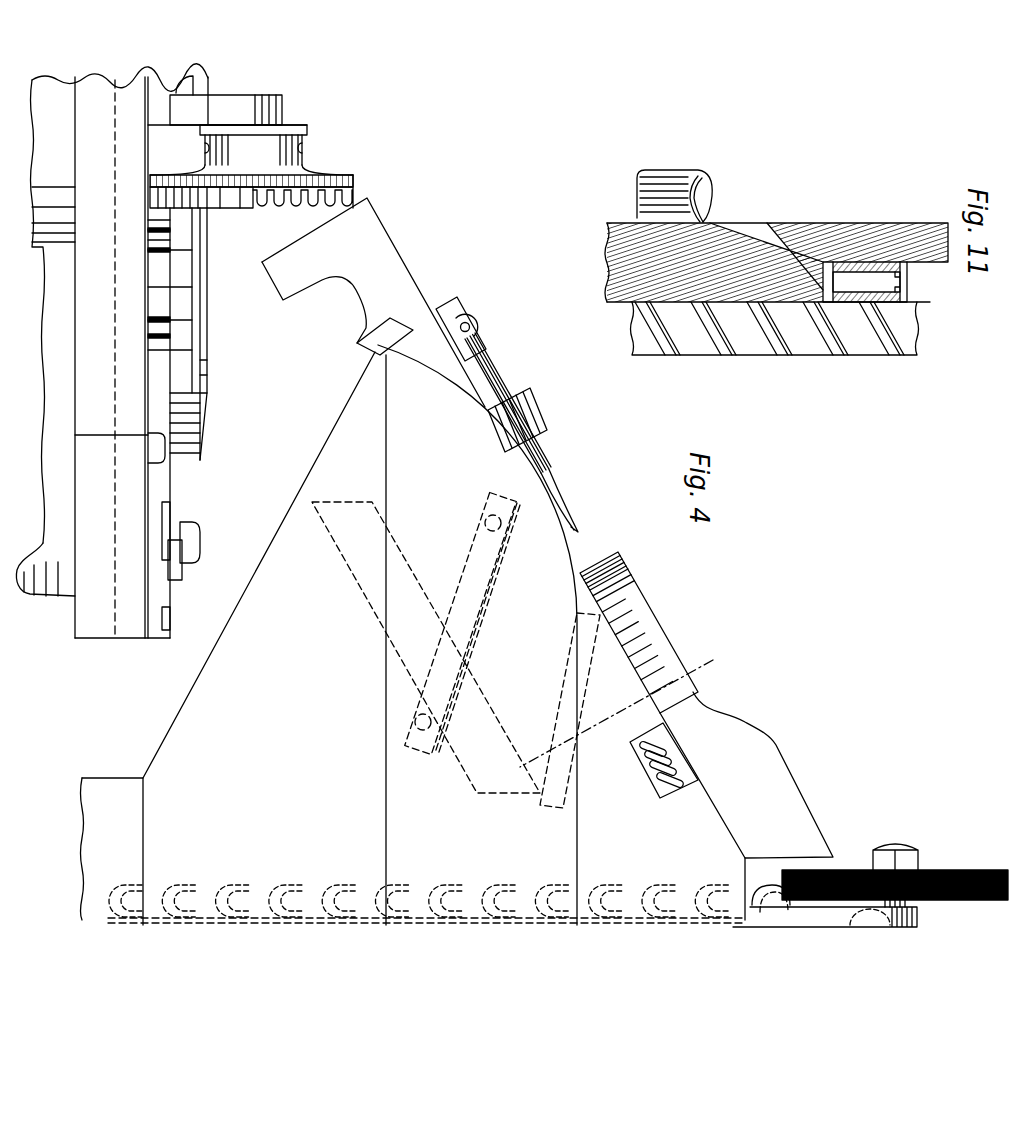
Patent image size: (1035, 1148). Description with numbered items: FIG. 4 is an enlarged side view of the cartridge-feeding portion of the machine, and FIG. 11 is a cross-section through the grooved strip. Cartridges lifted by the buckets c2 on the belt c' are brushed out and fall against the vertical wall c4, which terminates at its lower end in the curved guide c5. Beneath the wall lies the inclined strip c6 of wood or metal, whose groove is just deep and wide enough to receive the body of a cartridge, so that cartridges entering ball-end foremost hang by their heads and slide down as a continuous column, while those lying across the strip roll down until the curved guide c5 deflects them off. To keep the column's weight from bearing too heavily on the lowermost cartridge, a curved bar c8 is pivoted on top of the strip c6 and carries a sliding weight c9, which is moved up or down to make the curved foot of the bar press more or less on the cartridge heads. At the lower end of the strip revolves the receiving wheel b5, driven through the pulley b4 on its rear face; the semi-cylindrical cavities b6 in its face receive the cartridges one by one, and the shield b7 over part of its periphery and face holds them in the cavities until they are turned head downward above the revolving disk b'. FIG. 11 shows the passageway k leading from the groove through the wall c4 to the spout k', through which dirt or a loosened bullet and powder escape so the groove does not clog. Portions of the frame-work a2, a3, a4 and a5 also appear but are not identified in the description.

In FIG. 4, the frame body a2 is at (150, 640).
In FIG. 4, the bearing block a3 is at (182, 580).
In FIG. 4, the base bar a4 is at (918, 918).
In FIG. 4, the base plate a5 is at (1008, 898).
In FIG. 4, the revolving disk b' is at (184, 423).
In FIG. 4, the pulley b4 is at (335, 110).
In FIG. 4, the receiving wheel b5 is at (357, 178).
In FIG. 4, the semi-cylindrical cavities b6 is at (318, 205).
In FIG. 4, the shield b7 is at (236, 209).
In FIG. 11, the belt c' is at (775, 328).
In FIG. 11, the buckets c2 is at (887, 364).
In FIG. 4, the vertical wall c4 is at (731, 775).
In FIG. 11, the vertical wall c4 is at (875, 228).
In FIG. 4, the curved guide c5 is at (639, 632).
In FIG. 4, the grooved strip c6 is at (373, 302).
In FIG. 11, the grooved strip c6 is at (907, 290).
In FIG. 4, the curved bar c8 is at (507, 414).
In FIG. 4, the sliding weight c9 is at (523, 420).
In FIG. 4, the passageway k is at (621, 707).
In FIG. 11, the passageway k is at (766, 256).
In FIG. 4, the spout k' is at (463, 651).
In FIG. 11, the spout k' is at (686, 193).